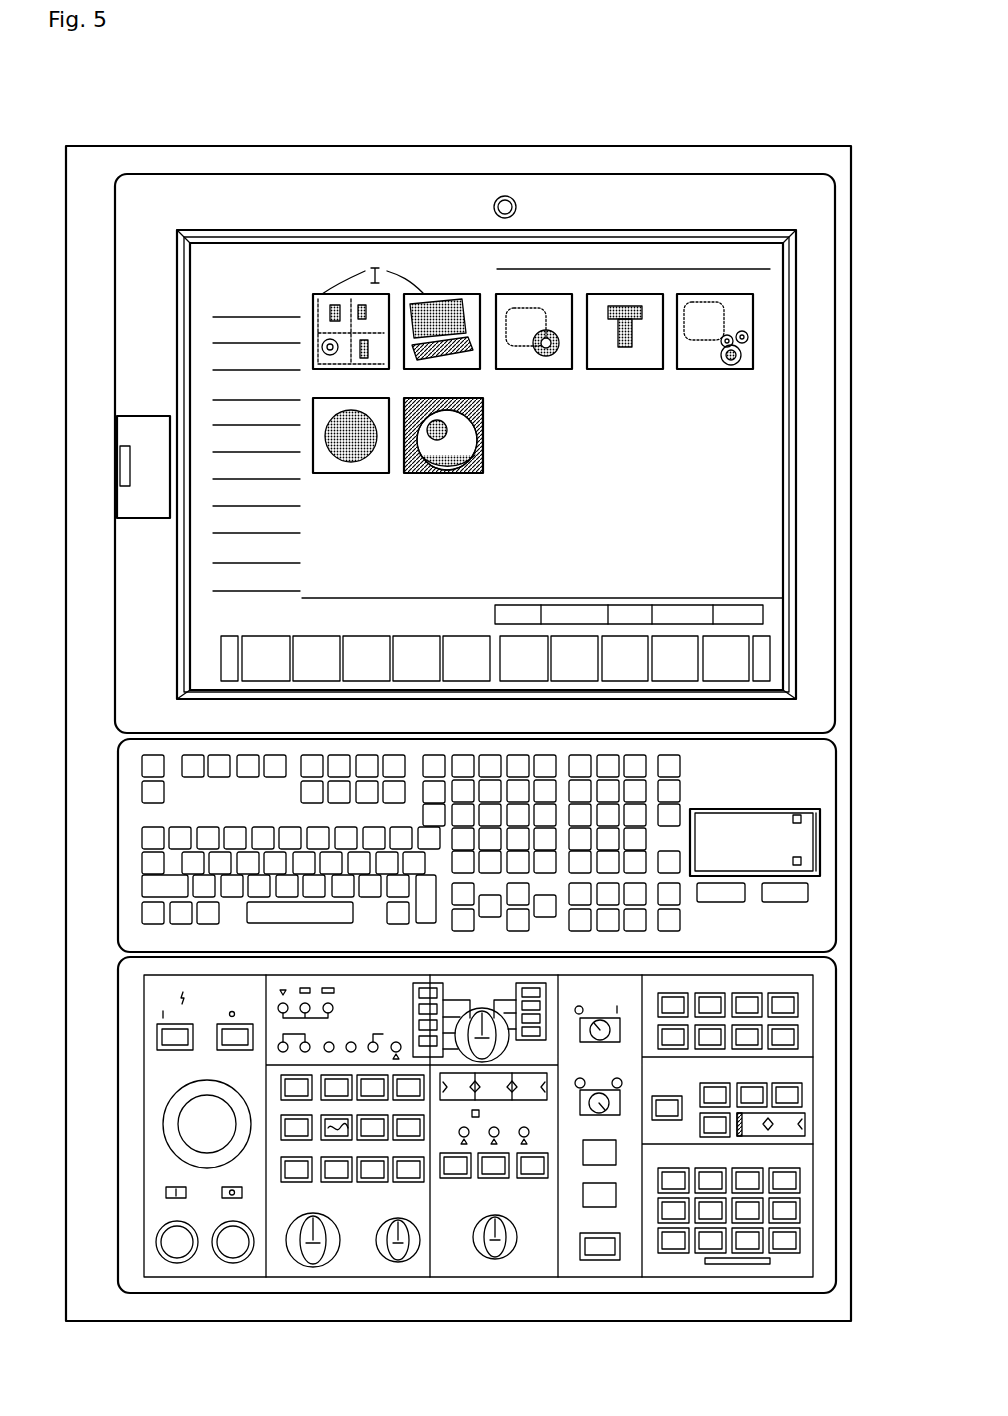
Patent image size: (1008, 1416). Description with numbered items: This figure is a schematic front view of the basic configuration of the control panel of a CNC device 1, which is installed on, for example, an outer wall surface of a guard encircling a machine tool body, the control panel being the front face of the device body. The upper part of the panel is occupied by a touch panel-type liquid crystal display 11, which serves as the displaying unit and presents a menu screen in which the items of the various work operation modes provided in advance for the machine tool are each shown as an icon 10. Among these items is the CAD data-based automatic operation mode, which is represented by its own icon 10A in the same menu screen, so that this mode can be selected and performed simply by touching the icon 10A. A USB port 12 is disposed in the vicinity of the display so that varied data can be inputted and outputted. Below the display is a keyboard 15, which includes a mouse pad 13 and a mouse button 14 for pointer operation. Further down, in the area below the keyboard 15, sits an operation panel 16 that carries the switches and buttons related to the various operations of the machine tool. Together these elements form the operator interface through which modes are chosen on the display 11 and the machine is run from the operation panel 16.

The CNC device 1 is at (137, 132).
The icon 10 is at (697, 362).
The icon of CAD data-based automatic operation mode 10A is at (483, 455).
The touch panel-type liquid crystal display 11 is at (626, 277).
The USB port 12 is at (137, 428).
The mouse pad 13 is at (777, 828).
The mouse button 14 is at (780, 887).
The keyboard 15 is at (793, 775).
The operation panel 16 is at (155, 1160).